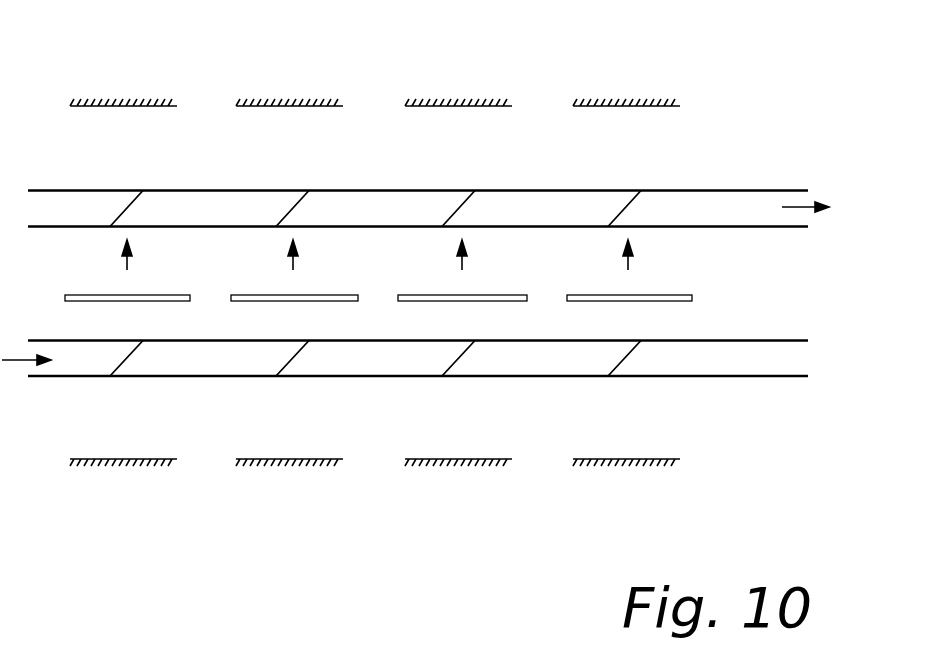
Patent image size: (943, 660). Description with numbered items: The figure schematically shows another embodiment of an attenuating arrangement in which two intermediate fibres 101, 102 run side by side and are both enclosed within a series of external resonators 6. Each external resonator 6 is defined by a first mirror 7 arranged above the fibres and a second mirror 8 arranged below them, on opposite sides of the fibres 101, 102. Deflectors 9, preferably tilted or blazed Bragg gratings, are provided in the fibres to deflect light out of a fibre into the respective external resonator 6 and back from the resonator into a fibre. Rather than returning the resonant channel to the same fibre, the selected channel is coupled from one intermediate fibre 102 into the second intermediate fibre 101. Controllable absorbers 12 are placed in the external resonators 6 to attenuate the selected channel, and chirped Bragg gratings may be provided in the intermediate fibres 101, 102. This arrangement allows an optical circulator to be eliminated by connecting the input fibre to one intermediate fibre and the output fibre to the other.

The external resonator 6 is at (629, 158).
The first mirror 7 is at (628, 100).
The second mirror 8 is at (677, 459).
The deflector 9 is at (635, 352).
The controllable absorber 12 is at (670, 293).
The second intermediate fibre 101 is at (745, 187).
The intermediate fibre 102 is at (777, 376).